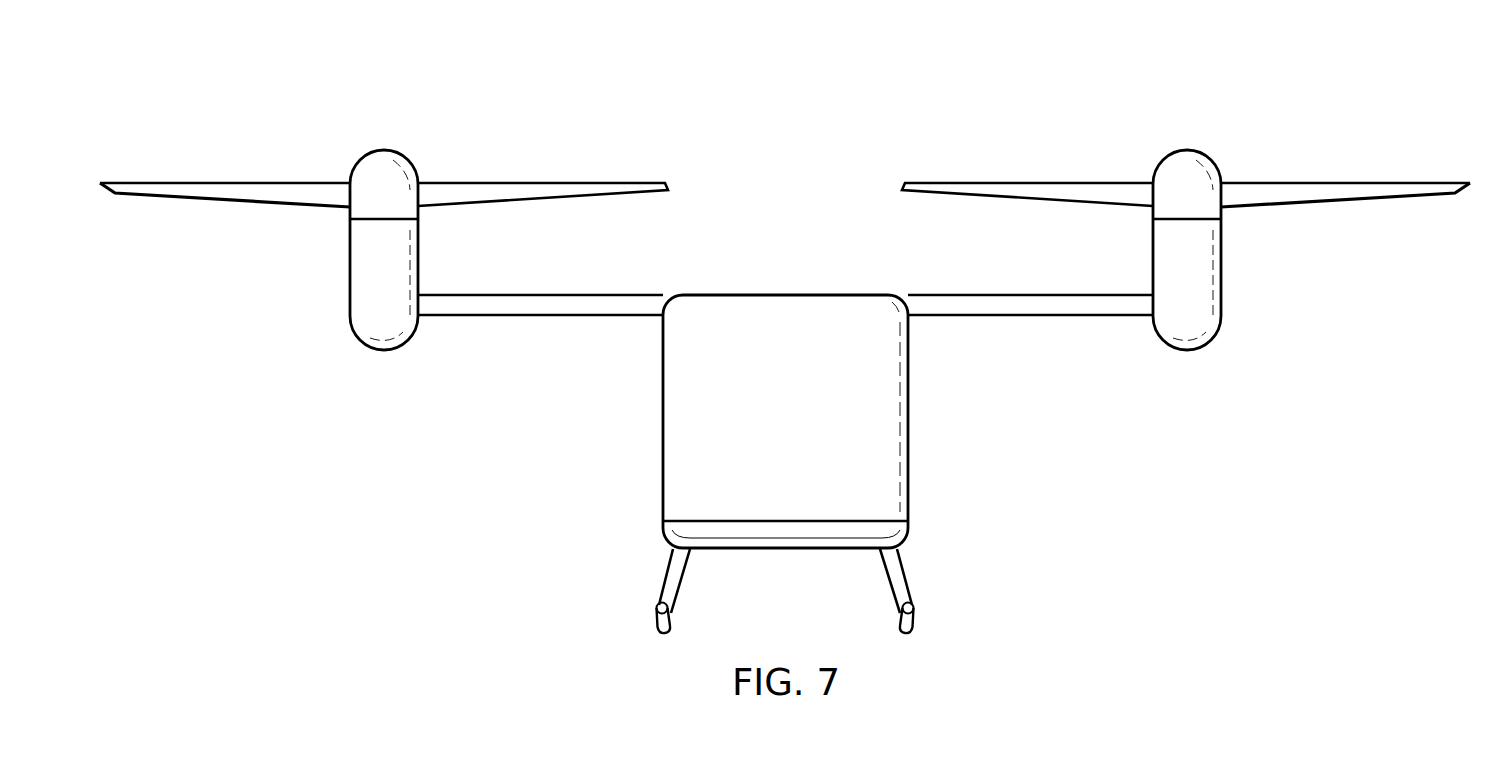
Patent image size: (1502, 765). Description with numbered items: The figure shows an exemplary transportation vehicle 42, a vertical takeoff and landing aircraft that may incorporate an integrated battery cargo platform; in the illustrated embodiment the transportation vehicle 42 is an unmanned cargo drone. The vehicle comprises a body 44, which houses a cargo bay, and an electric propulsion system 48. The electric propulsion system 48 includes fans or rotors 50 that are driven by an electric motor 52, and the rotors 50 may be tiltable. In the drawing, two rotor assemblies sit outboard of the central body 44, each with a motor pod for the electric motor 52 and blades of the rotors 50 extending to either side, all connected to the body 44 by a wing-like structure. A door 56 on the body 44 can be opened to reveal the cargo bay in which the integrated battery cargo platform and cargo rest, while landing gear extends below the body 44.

The transportation vehicle 42 is at (758, 116).
The body 44 is at (785, 549).
The electric propulsion system 48 is at (370, 112).
The rotors 50 is at (252, 184).
The electric motor 52 is at (348, 266).
The door 56 is at (672, 422).